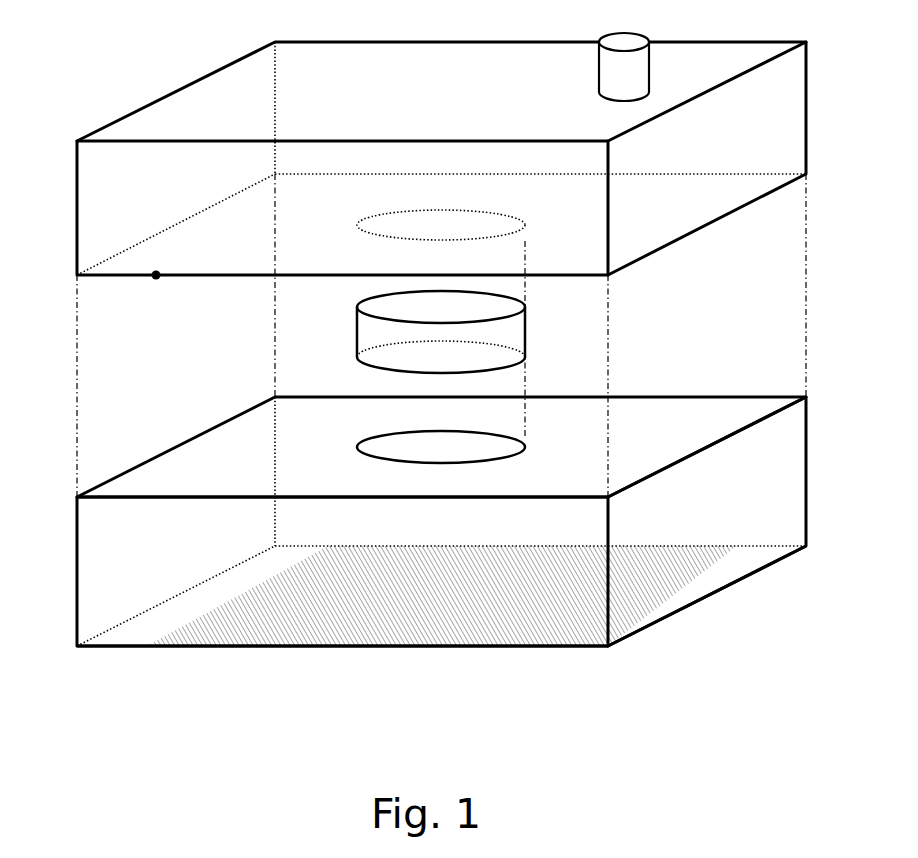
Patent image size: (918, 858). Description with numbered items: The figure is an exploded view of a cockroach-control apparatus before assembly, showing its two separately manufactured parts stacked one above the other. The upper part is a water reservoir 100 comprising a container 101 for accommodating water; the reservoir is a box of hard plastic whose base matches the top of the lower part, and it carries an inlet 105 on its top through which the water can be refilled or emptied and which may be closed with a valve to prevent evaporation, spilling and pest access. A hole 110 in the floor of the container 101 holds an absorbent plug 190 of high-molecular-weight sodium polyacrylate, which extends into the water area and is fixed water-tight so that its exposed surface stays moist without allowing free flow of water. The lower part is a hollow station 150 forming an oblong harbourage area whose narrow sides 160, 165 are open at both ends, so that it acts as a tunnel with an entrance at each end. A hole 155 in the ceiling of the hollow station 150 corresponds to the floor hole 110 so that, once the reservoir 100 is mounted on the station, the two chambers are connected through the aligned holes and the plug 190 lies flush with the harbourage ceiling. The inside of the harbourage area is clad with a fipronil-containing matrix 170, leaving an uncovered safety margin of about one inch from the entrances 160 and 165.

The water reservoir 100 is at (145, 72).
The container 101 is at (148, 282).
The inlet 105 is at (624, 67).
The hole 110 is at (424, 235).
The absorbent plug 190 is at (424, 357).
The hollow station 150 is at (152, 667).
The hole 155 is at (424, 459).
The narrow side 160 is at (151, 575).
The narrow side 165 is at (748, 508).
The fipronil-containing matrix 170 is at (420, 621).